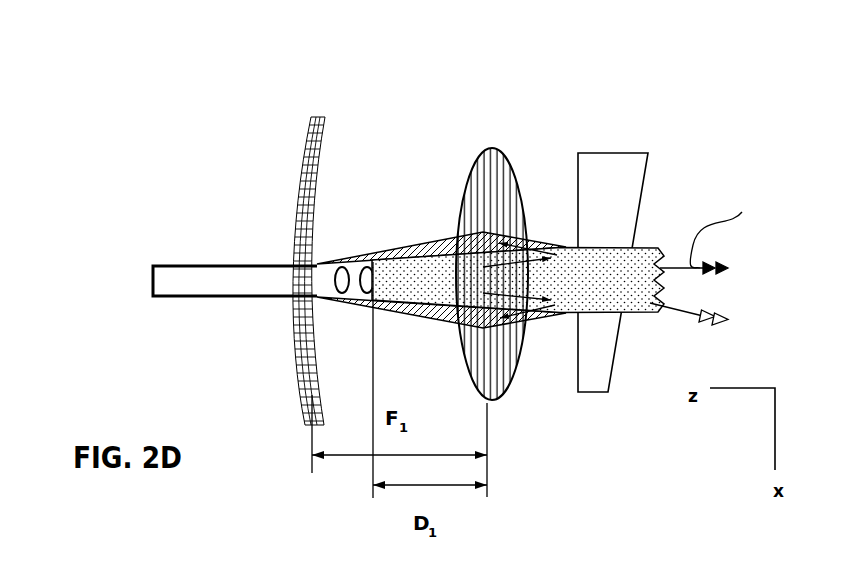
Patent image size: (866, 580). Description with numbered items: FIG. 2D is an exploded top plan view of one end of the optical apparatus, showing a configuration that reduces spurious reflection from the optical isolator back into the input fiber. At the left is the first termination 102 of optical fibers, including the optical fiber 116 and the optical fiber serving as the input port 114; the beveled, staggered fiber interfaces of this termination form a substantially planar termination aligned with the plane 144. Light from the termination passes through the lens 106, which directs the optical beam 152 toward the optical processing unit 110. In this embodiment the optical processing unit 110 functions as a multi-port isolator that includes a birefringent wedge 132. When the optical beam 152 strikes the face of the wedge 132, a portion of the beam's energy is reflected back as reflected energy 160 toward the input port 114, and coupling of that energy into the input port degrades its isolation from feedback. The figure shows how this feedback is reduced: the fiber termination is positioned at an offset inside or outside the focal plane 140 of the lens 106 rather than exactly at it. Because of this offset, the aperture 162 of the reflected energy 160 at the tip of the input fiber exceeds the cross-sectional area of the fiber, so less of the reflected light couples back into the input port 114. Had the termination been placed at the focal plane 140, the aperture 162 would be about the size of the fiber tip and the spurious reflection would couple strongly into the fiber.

The optical processing unit 110 is at (712, 88).
The first termination 102 is at (219, 221).
The optical fiber 116 is at (184, 284).
The focal plane 140 is at (312, 117).
The plane 144 is at (340, 163).
The aperture 162 is at (343, 298).
The birefringent wedge 132 is at (607, 153).
The input port 114 is at (374, 262).
The lens 106 is at (493, 148).
The reflected energy 160 is at (546, 322).
The optical beam 152 is at (700, 313).